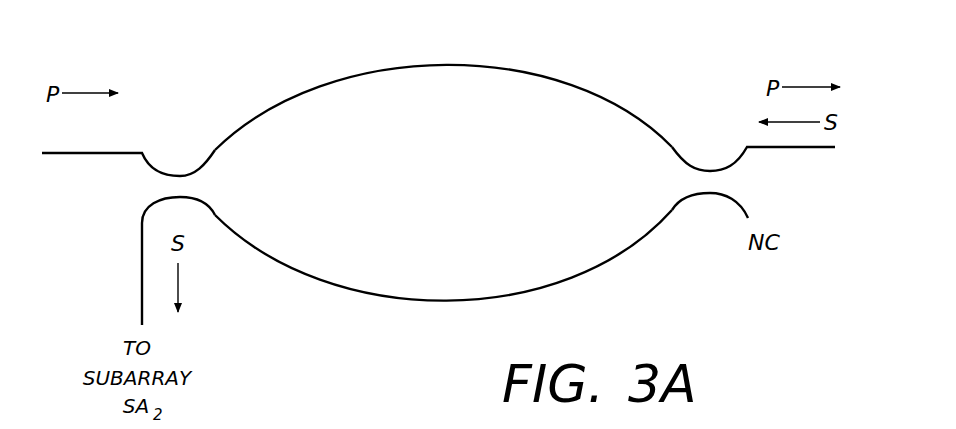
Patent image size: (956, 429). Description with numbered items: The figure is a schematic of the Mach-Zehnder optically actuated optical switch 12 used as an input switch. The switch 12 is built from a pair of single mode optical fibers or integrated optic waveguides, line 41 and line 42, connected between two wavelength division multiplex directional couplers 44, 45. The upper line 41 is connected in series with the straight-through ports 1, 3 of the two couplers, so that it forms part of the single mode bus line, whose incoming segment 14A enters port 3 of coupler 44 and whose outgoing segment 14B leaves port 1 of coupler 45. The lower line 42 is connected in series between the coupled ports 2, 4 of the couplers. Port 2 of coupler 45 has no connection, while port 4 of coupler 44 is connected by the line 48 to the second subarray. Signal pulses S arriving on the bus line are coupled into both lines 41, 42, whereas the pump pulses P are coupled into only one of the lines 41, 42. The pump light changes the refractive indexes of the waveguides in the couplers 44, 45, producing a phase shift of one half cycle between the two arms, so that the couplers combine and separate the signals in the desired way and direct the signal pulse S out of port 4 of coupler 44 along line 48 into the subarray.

The optical switch 12 is at (600, 44).
The single mode bus line 14A is at (90, 155).
The single mode bus line 14B is at (822, 147).
The optical waveguide line 41 is at (450, 65).
The optical waveguide line 42 is at (448, 300).
The wavelength division multiplex directional coupler 44 is at (182, 128).
The wavelength division multiplex directional coupler 45 is at (703, 130).
The subarray feed line 48 is at (142, 261).
The straight through port 1 is at (481, 128).
The coupled port 2 is at (479, 191).
The straight through port 3 is at (402, 128).
The coupled port 4 is at (402, 191).